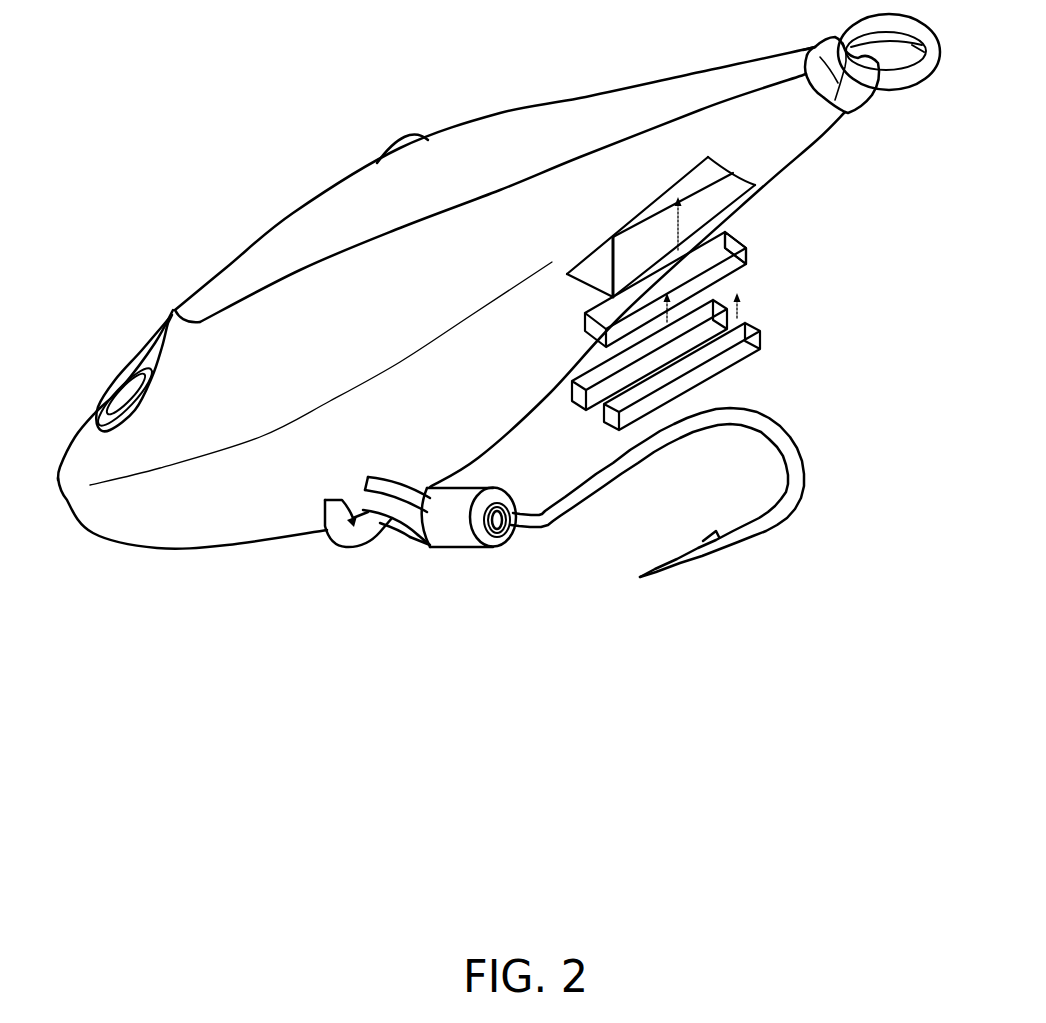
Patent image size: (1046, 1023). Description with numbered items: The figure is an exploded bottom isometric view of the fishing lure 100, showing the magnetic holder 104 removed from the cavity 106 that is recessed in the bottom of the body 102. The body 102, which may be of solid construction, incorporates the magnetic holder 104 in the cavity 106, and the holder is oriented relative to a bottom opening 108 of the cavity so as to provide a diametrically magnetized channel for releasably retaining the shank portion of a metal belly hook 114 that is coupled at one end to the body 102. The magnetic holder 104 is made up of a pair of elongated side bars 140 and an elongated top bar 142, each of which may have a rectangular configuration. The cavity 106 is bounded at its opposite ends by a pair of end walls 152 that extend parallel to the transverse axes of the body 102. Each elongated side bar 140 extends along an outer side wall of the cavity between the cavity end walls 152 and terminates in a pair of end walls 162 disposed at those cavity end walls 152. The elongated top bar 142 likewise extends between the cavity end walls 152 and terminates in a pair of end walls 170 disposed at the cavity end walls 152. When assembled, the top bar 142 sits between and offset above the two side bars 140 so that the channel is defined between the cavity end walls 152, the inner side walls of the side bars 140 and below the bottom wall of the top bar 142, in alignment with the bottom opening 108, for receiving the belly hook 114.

The fishing lure 100 is at (313, 108).
The body 102 is at (538, 105).
The magnetic holder 104 is at (766, 336).
The cavity 106 is at (720, 193).
The bottom opening 108 is at (590, 280).
The metal belly hook 114 is at (788, 423).
The elongated side bars 140 is at (565, 392).
The elongated top bar 142 is at (752, 246).
The end walls 152 is at (588, 263).
The end walls 162 is at (713, 297).
The end walls 170 is at (590, 338).